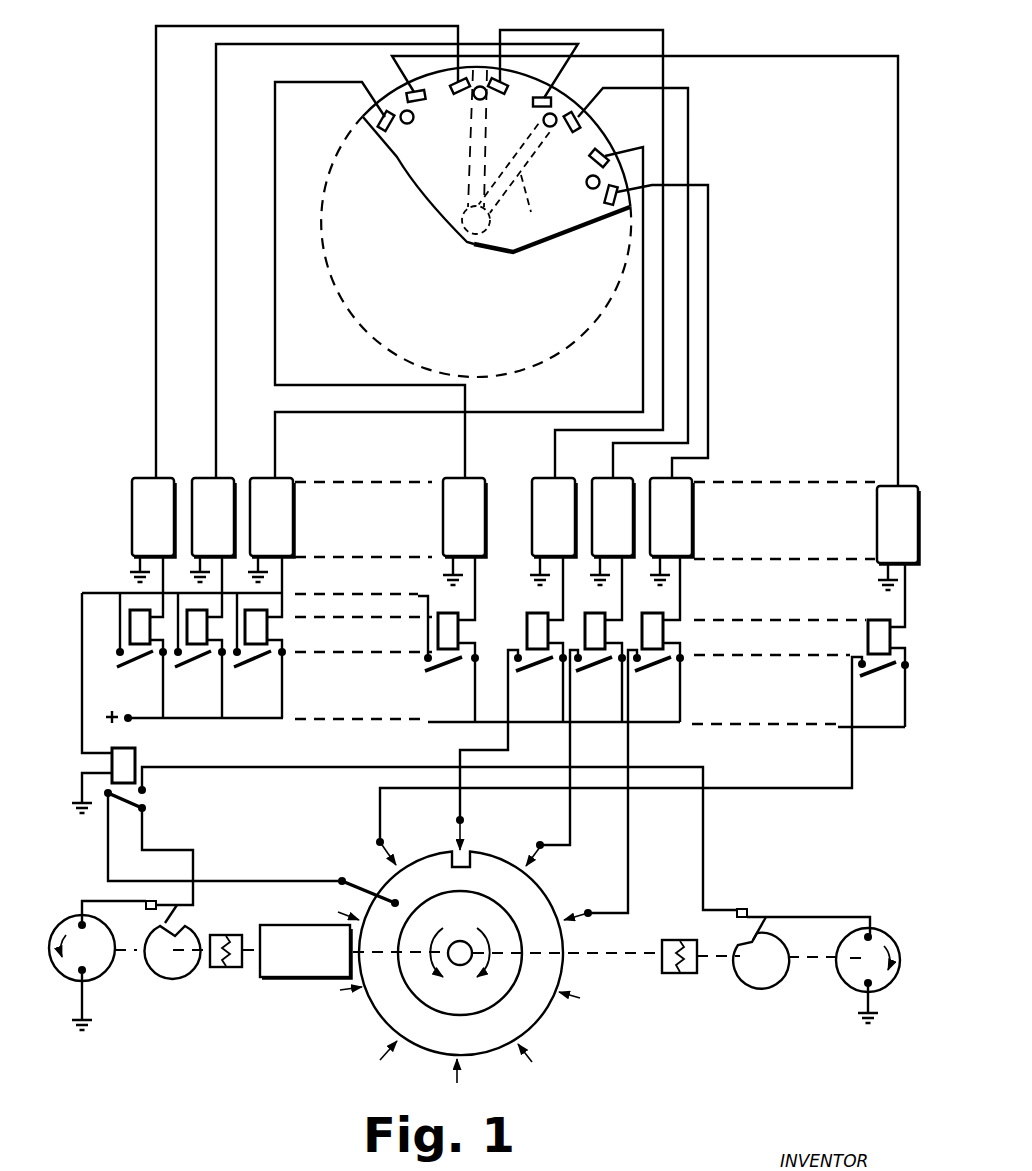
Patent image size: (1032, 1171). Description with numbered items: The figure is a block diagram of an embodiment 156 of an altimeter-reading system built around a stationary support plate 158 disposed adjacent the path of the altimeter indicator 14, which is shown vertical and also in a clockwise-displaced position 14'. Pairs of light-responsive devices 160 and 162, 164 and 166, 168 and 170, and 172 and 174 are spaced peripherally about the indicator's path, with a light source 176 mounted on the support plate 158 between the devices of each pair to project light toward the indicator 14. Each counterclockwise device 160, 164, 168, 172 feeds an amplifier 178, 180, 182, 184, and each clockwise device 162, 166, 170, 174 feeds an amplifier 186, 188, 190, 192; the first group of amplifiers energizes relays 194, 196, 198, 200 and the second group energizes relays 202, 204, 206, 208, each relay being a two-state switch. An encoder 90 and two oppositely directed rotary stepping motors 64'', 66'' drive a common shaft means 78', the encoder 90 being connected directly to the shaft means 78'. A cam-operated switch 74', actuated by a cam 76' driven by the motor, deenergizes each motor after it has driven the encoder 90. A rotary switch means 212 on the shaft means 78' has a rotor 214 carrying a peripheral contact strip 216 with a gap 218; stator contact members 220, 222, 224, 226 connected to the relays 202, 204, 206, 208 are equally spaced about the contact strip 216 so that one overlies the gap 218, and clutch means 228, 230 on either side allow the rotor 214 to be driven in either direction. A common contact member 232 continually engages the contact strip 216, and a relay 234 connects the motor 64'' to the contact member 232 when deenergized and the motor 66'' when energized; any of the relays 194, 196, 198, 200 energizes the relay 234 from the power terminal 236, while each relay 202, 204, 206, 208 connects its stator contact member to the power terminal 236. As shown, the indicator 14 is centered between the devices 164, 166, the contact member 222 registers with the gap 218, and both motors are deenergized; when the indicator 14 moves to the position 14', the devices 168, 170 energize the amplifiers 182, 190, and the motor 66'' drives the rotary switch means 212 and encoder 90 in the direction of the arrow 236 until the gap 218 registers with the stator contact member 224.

The indicator 14 is at (461, 152).
The indicator position 14' is at (514, 186).
The embodiment 156 is at (128, 422).
The stationary support plate 158 is at (533, 253).
The light-responsive device 160 is at (372, 114).
The light-responsive device 162 is at (395, 80).
The light-responsive device 164 is at (457, 93).
The light-responsive device 166 is at (502, 93).
The light-responsive device 168 is at (557, 94).
The light-responsive device 170 is at (583, 119).
The light-responsive device 172 is at (606, 150).
The light-responsive device 174 is at (610, 205).
The light source 176 is at (480, 86).
The amplifier 178 is at (454, 500).
The amplifier 180 is at (147, 510).
The amplifier 182 is at (218, 495).
The amplifier 184 is at (275, 497).
The amplifier 186 is at (893, 527).
The amplifier 188 is at (543, 497).
The amplifier 190 is at (605, 498).
The amplifier 192 is at (692, 514).
The relay 194 is at (447, 670).
The relay 196 is at (142, 667).
The relay 198 is at (197, 667).
The relay 200 is at (257, 667).
The relay 202 is at (880, 676).
The relay 204 is at (540, 670).
The relay 206 is at (598, 670).
The relay 208 is at (657, 670).
The rotary switch means 212 is at (551, 1063).
The rotor 214 is at (468, 1006).
The contact strip 216 is at (525, 1005).
The gap 218 is at (466, 860).
The stator contact member 220 is at (382, 841).
The stator contact member 222 is at (462, 821).
The stator contact member 224 is at (541, 848).
The stator contact member 226 is at (587, 913).
The clutch means 228 is at (675, 970).
The clutch means 230 is at (220, 963).
The common contact member 232 is at (342, 879).
The relay 234 is at (160, 797).
The power terminal 236 is at (135, 727).
The rotary stepping motor 64'' is at (95, 958).
The rotary stepping motor 66'' is at (854, 971).
The cam-operated switch 74' is at (488, 899).
The cam 76' is at (467, 963).
The shaft means 78' is at (621, 980).
The encoder 90 is at (313, 984).